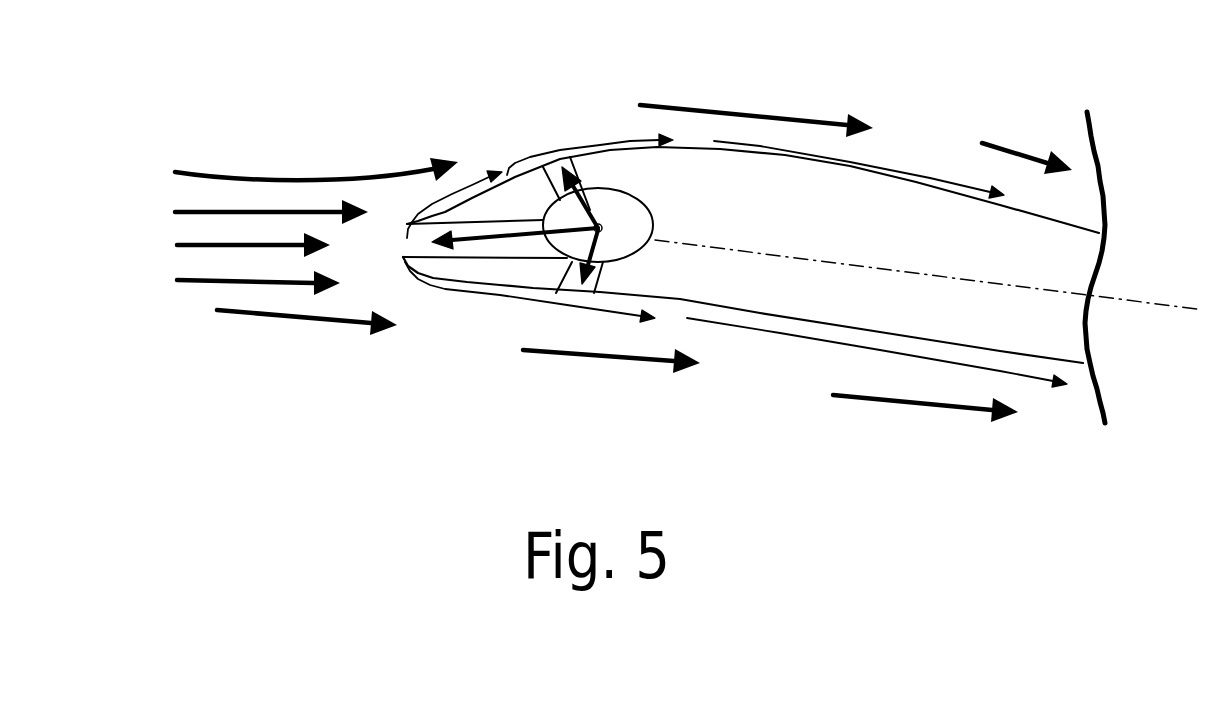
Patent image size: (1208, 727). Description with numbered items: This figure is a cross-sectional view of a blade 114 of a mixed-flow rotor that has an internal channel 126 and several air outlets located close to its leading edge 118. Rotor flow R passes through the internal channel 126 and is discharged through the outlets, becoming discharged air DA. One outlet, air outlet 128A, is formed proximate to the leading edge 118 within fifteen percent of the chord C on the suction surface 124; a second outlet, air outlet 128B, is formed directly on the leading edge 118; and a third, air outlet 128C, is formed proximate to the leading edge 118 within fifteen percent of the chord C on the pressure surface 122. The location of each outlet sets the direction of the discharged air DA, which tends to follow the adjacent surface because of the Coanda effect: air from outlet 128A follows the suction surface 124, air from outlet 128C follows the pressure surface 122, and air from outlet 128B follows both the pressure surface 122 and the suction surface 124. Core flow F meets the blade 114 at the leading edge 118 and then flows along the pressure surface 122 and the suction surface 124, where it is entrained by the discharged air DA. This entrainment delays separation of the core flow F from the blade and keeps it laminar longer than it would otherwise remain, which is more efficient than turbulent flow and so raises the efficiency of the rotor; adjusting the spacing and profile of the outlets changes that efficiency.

The blade 114 is at (754, 317).
The leading edge 118 is at (403, 256).
The pressure surface 122 is at (786, 155).
The suction surface 124 is at (921, 336).
The internal channel 126 is at (610, 242).
The air outlet 128A is at (573, 278).
The air outlet 128B is at (423, 240).
The air outlet 128C is at (560, 166).
The discharged air DA is at (535, 155).
The rotor flow R is at (603, 226).
The core flow F is at (609, 263).
The chord C is at (1164, 304).